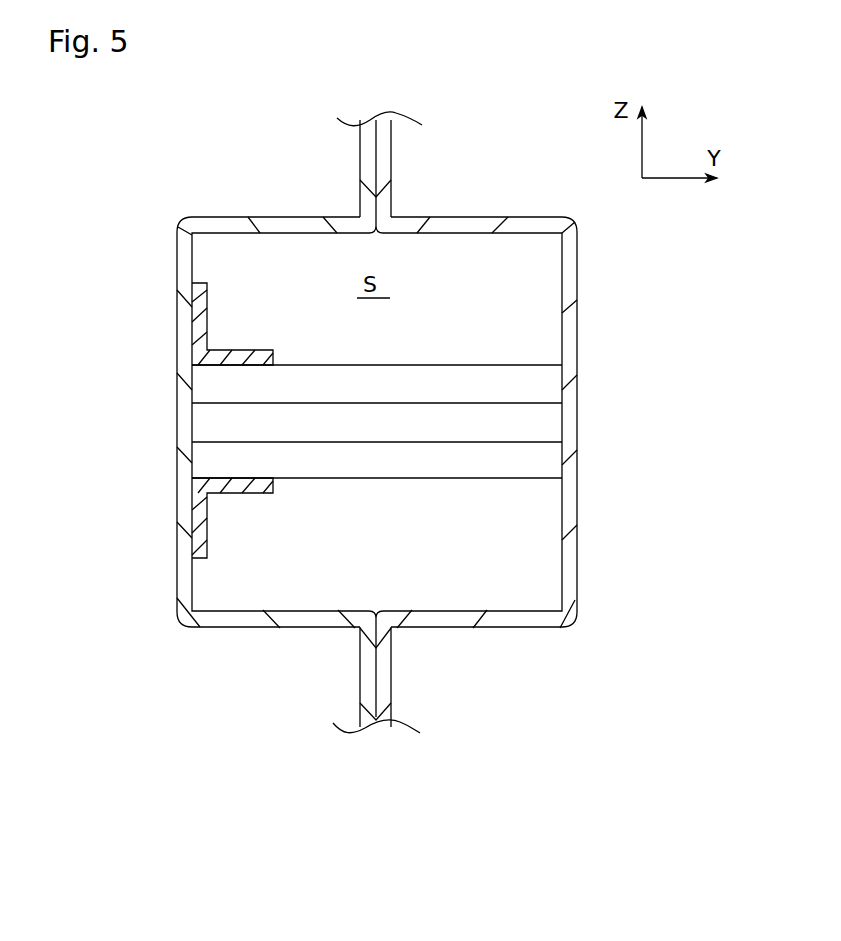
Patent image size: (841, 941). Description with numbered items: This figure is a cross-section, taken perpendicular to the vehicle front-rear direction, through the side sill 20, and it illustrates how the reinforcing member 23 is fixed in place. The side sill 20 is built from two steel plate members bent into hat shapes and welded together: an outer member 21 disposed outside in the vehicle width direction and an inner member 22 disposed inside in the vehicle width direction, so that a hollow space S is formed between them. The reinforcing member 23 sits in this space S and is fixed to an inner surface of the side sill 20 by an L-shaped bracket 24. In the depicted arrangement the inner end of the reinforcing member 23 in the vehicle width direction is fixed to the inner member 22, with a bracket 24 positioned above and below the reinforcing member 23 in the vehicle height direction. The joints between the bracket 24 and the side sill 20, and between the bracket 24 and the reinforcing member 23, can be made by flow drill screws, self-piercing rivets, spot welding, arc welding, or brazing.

The side sill 20 is at (377, 498).
The outer member 21 is at (502, 628).
The inner member 22 is at (247, 628).
The reinforcing member 23 is at (550, 390).
The bracket 24 is at (198, 306).